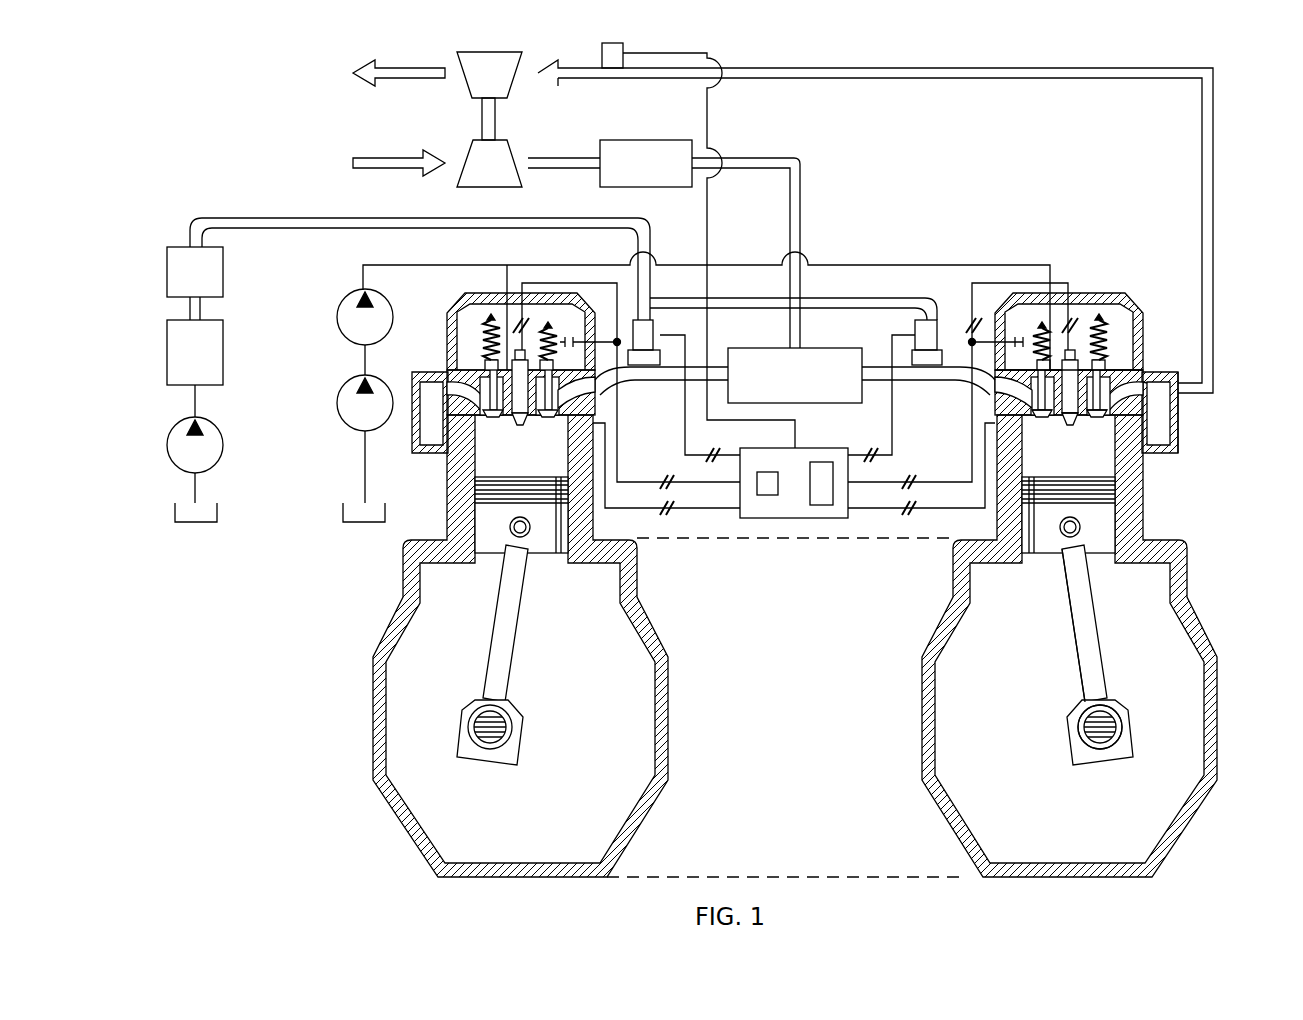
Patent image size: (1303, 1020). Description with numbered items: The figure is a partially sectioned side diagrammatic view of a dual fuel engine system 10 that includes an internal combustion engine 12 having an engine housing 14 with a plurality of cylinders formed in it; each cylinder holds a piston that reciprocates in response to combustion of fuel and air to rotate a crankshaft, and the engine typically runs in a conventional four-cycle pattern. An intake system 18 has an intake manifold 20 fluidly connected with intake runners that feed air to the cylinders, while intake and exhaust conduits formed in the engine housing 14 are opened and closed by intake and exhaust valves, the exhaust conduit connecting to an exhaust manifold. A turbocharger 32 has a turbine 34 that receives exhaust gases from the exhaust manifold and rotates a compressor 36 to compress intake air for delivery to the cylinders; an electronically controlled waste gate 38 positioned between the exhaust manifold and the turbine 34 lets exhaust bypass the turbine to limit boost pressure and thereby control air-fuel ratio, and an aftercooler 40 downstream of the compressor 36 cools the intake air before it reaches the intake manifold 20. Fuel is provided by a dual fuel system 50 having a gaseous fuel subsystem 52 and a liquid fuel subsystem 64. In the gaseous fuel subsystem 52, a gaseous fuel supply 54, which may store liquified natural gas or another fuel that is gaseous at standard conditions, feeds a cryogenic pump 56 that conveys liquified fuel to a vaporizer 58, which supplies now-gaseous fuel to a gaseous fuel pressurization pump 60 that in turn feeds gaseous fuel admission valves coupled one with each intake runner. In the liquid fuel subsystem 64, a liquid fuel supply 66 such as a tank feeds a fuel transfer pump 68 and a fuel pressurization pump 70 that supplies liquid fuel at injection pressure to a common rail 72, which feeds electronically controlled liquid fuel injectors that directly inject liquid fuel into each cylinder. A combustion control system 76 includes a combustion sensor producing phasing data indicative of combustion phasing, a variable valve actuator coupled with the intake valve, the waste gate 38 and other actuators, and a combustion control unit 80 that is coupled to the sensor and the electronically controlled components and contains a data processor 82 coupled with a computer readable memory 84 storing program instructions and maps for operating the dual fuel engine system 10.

The dual fuel engine system 10 is at (155, 128).
The internal combustion engine 12 is at (362, 622).
The engine housing 14 is at (372, 662).
The intake system 18 is at (830, 188).
The intake manifold 20 is at (820, 348).
The turbocharger 32 is at (512, 50).
The turbine 34 is at (476, 50).
The compressor 36 is at (475, 140).
The waste gate 38 is at (602, 55).
The aftercooler 40 is at (654, 140).
The dual fuel system 50 is at (228, 550).
The gaseous fuel subsystem 52 is at (163, 412).
The gaseous fuel supply 54 is at (222, 512).
The cryogenic pump 56 is at (224, 443).
The vaporizer 58 is at (224, 347).
The gaseous fuel pressurization pump 60 is at (224, 270).
The liquid fuel subsystem 64 is at (342, 445).
The liquid fuel supply 66 is at (388, 512).
The fuel transfer pump 68 is at (337, 402).
The fuel pressurization pump 70 is at (337, 314).
The common rail 72 is at (930, 265).
The combustion control system 76 is at (858, 520).
The combustion control unit 80 is at (805, 518).
The data processor 82 is at (768, 472).
The computer readable memory 84 is at (822, 462).